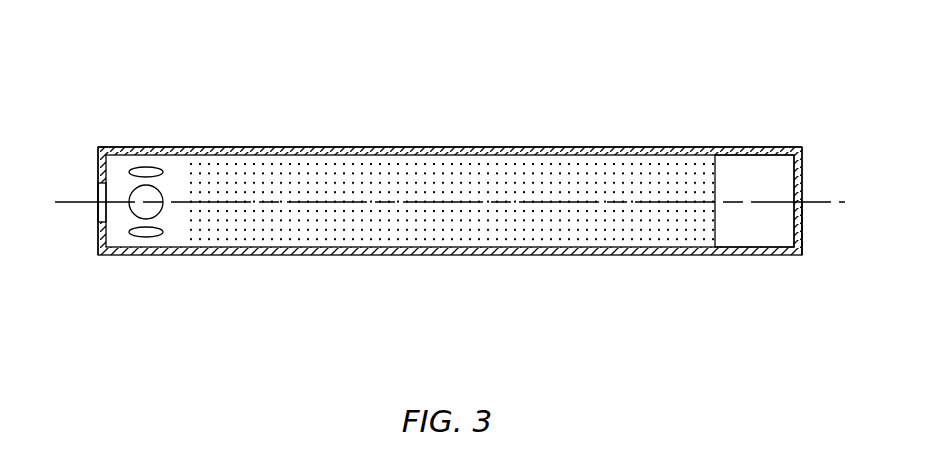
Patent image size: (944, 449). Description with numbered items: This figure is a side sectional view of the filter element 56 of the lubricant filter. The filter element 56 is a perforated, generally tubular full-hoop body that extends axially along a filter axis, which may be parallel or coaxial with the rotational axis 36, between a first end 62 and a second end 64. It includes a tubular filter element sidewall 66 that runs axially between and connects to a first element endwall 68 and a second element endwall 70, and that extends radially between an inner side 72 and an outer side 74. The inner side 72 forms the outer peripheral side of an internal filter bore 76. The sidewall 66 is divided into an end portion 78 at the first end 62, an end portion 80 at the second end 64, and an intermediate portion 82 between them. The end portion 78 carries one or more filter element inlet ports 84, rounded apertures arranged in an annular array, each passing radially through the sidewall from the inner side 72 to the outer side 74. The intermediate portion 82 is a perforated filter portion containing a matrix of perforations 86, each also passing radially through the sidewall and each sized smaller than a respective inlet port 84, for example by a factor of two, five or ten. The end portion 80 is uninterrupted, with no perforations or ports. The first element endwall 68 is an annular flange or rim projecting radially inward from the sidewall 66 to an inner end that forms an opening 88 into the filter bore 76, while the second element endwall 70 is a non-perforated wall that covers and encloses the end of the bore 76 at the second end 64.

The filter element 56 is at (683, 97).
The first end 62 is at (100, 163).
The second end 64 is at (803, 163).
The filter element sidewall 66 is at (190, 145).
The first element endwall 68 is at (95, 241).
The second element endwall 70 is at (807, 237).
The inner side 72 is at (513, 155).
The outer side 74 is at (495, 148).
The filter bore 76 is at (742, 190).
The end portion 78 is at (98, 328).
The end portion 80 is at (715, 328).
The intermediate portion 82 is at (187, 328).
The filter element inlet ports 84 is at (149, 167).
The perforations 86 is at (280, 147).
The opening 88 is at (97, 212).
The rotational axis 36 is at (478, 156).